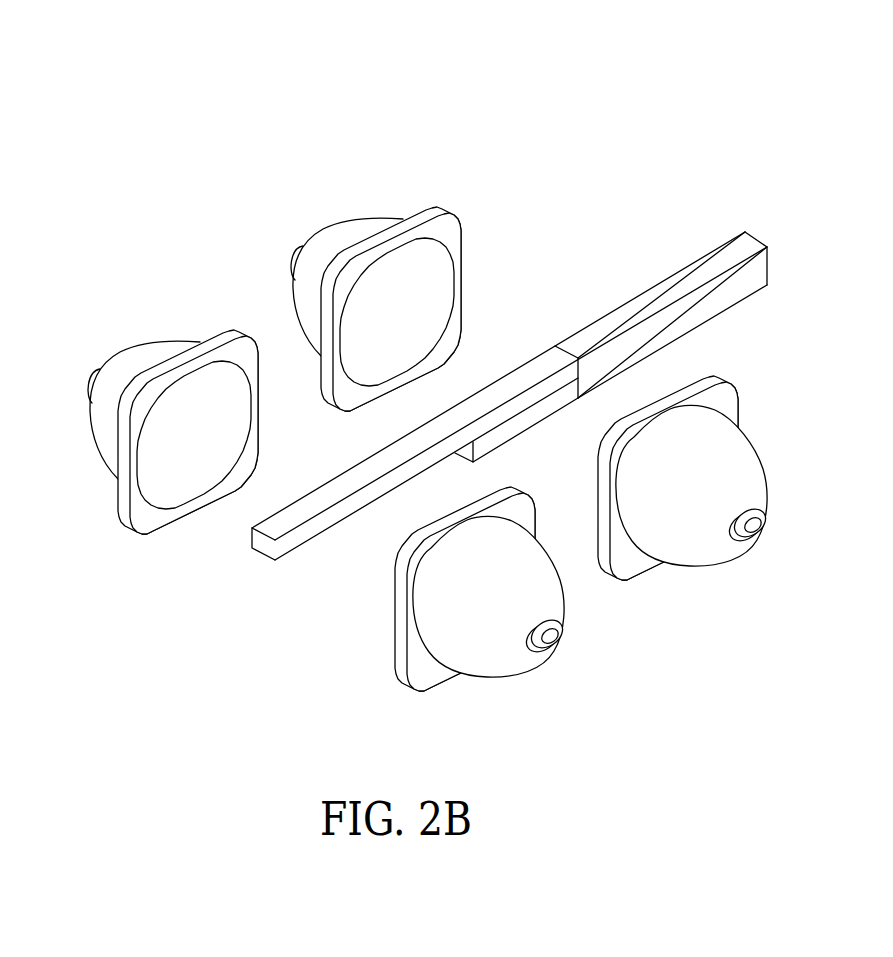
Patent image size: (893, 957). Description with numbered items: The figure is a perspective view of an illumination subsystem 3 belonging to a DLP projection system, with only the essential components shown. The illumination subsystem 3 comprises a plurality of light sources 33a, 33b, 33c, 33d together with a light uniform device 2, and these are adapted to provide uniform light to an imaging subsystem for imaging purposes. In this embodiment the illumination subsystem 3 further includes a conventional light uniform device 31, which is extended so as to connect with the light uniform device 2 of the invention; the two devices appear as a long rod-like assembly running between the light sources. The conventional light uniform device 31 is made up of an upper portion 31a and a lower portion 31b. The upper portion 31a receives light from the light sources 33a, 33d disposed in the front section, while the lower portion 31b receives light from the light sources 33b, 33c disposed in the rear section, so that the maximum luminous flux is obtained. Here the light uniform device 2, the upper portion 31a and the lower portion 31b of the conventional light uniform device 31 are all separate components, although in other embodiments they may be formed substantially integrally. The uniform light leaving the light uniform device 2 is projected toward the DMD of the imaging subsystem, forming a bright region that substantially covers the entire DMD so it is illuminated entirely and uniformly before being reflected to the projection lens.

The illumination subsystem 3 is at (378, 96).
The light uniform device 2 is at (647, 291).
The conventional light uniform device 31 is at (486, 436).
The upper portion 31a is at (498, 392).
The lower portion 31b is at (507, 432).
The light source 33a is at (168, 342).
The light source 33b is at (341, 224).
The light source 33c is at (685, 563).
The light source 33d is at (482, 677).